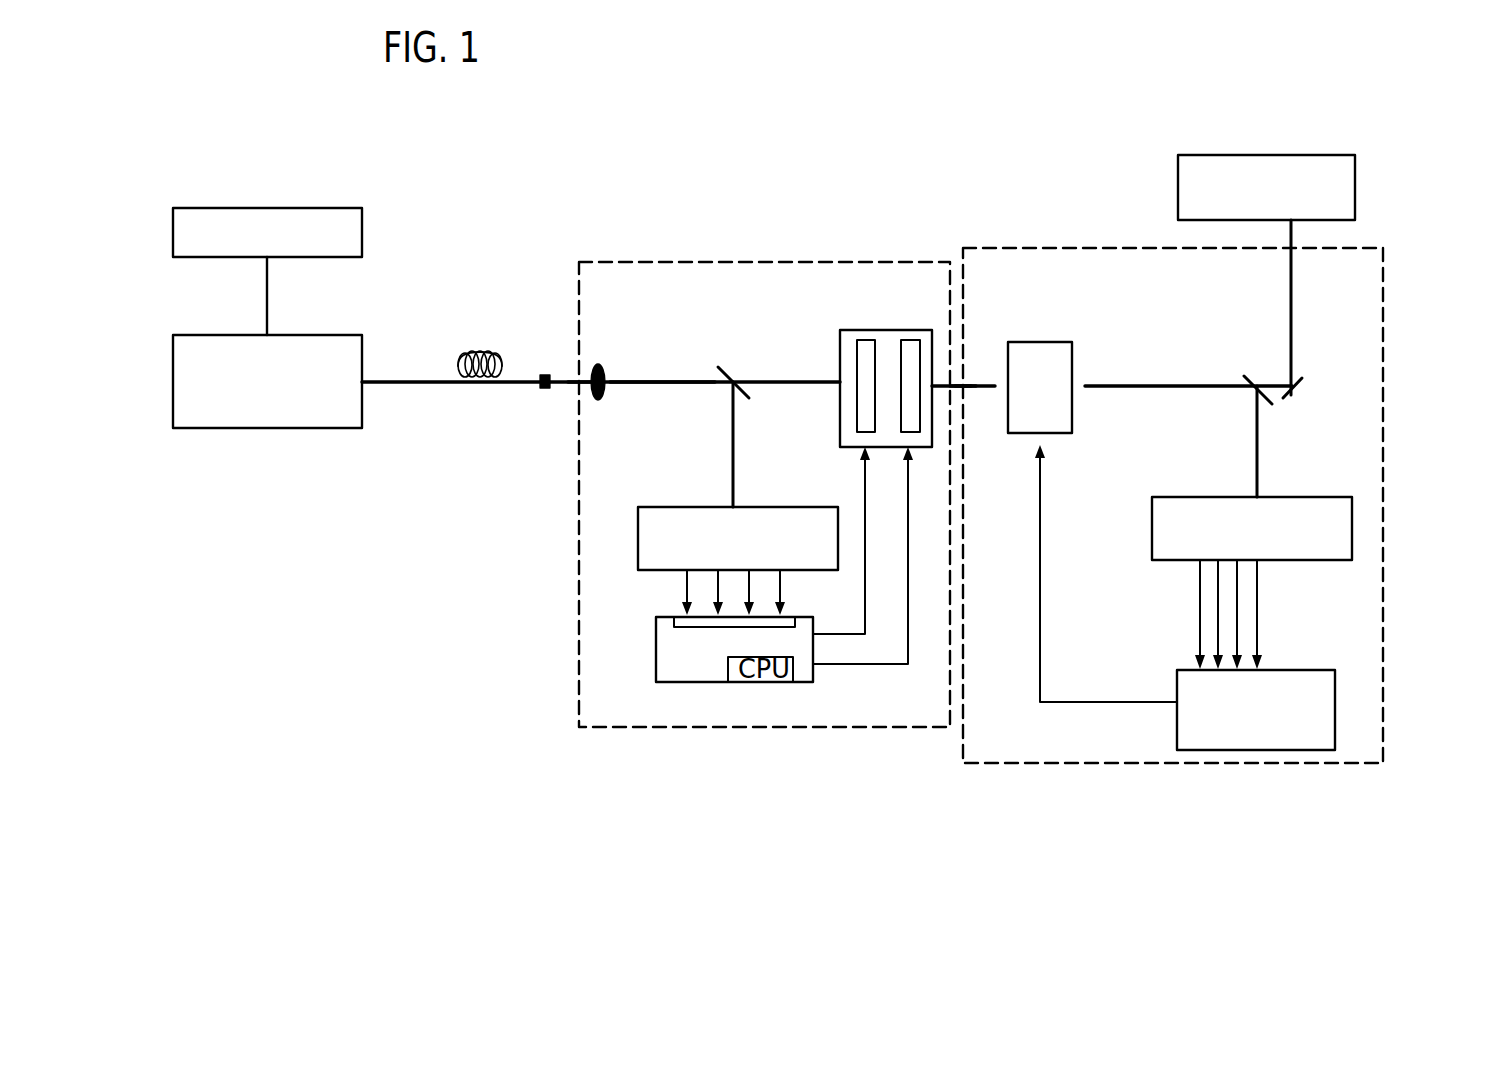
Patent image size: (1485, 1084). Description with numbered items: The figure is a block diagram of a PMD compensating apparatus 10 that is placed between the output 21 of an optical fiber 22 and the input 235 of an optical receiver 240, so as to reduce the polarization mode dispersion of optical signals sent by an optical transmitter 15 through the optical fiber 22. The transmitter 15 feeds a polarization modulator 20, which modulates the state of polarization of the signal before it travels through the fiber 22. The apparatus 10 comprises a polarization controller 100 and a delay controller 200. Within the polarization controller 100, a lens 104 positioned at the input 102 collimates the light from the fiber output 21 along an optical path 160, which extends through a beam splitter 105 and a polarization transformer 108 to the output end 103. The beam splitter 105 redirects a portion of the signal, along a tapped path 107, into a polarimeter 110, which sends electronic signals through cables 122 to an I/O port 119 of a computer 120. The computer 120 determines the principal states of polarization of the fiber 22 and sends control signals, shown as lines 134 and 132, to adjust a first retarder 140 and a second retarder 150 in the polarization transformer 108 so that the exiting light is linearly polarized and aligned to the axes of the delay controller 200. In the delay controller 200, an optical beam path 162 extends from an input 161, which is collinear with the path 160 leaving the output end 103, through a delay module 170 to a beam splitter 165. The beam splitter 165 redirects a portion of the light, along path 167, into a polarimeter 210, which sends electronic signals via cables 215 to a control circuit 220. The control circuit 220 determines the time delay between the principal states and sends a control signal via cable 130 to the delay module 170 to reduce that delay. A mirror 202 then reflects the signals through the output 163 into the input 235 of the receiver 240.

The compensating apparatus 10 is at (1173, 832).
The optical transmitter 15 is at (363, 228).
The polarization modulator 20 is at (363, 337).
The output of optical fiber 21 is at (545, 390).
The optical fiber 22 is at (441, 380).
The polarization controller 100 is at (820, 263).
The input of polarization controller 102 is at (579, 378).
The output end of polarization controller 103 is at (962, 386).
The lens 104 is at (600, 364).
The beam splitter 105 is at (737, 377).
The tap path to polarimeter 1 107 is at (735, 455).
The polarization transformer 108 is at (840, 331).
The polarimeter 110 is at (660, 508).
The I/O port 119 is at (790, 623).
The computer 120 is at (655, 662).
The cables 122 is at (685, 585).
The cable 130 is at (1082, 698).
The control line 132 is at (883, 667).
The control line 134 is at (868, 557).
The first retarder 140 is at (866, 340).
The second retarder 150 is at (934, 338).
The optical path 160 is at (673, 380).
The input of delay controller 161 is at (962, 388).
The optical beam path 162 is at (1158, 385).
The output of delay controller 163 is at (1293, 247).
The beam splitter 165 is at (1262, 386).
The tap path to polarimeter 2 167 is at (1260, 455).
The delay module 170 is at (1050, 343).
The delay controller 200 is at (1050, 248).
The mirror 202 is at (1293, 392).
The polarimeter 210 is at (1158, 508).
The cables 215 is at (1260, 602).
The control circuit 220 is at (1187, 682).
The input of optical receiver 235 is at (1293, 225).
The optical receiver 240 is at (1357, 172).